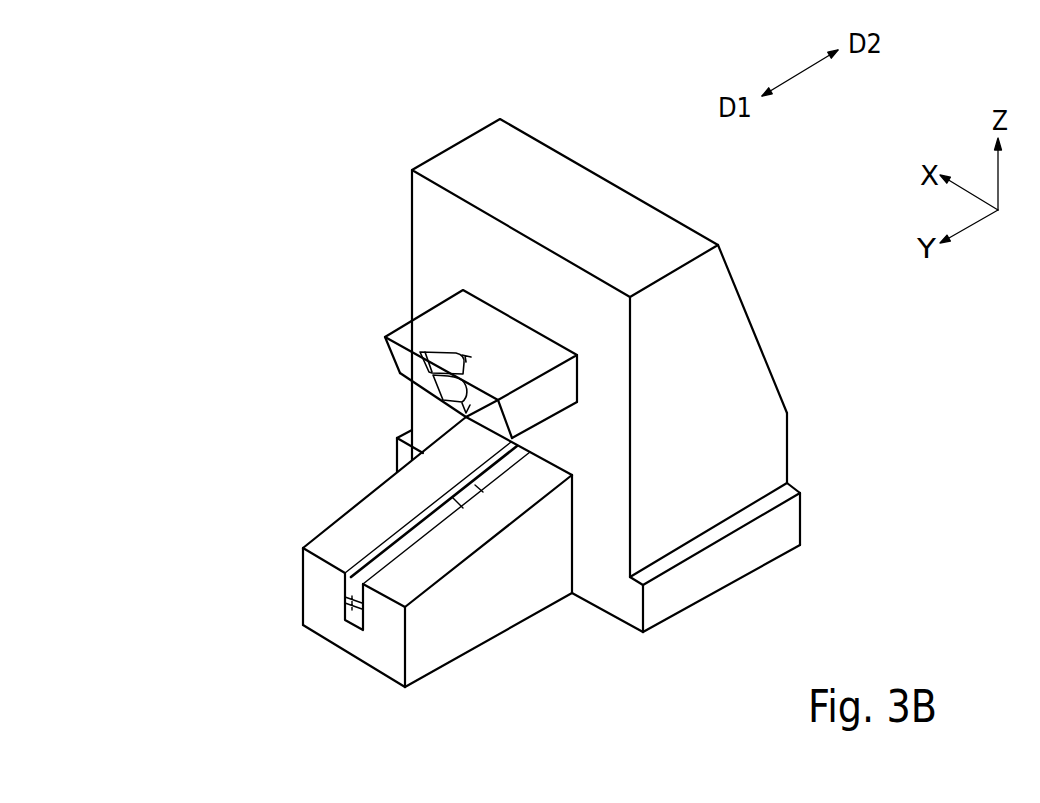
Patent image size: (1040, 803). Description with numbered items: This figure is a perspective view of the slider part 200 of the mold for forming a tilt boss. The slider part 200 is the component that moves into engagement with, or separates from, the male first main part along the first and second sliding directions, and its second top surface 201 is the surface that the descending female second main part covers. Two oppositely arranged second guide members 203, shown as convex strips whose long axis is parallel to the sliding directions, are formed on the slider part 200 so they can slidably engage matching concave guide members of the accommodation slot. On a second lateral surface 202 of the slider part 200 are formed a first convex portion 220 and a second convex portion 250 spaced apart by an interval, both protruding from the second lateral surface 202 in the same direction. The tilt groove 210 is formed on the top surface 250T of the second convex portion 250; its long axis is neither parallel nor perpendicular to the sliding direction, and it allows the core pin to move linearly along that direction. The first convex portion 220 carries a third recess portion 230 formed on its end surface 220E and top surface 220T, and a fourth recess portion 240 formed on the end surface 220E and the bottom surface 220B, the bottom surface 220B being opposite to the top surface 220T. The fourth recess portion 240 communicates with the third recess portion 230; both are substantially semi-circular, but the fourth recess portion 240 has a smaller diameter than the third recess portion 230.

The slider part 200 is at (235, 110).
The second top surface 201 is at (473, 155).
The second lateral surface 202 is at (427, 224).
The second guide members 203 is at (393, 452).
The tilt groove 210 is at (355, 626).
The first convex portion 220 is at (567, 357).
The top surface of the first convex portion 220T is at (452, 315).
The end surface of the first convex portion 220E is at (403, 358).
The bottom surface of the first convex portion 220B is at (567, 412).
The third recess portion 230 is at (445, 360).
The fourth recess portion 240 is at (442, 390).
The second convex portion 250 is at (381, 552).
The top surface of the second convex portion 250T is at (345, 527).